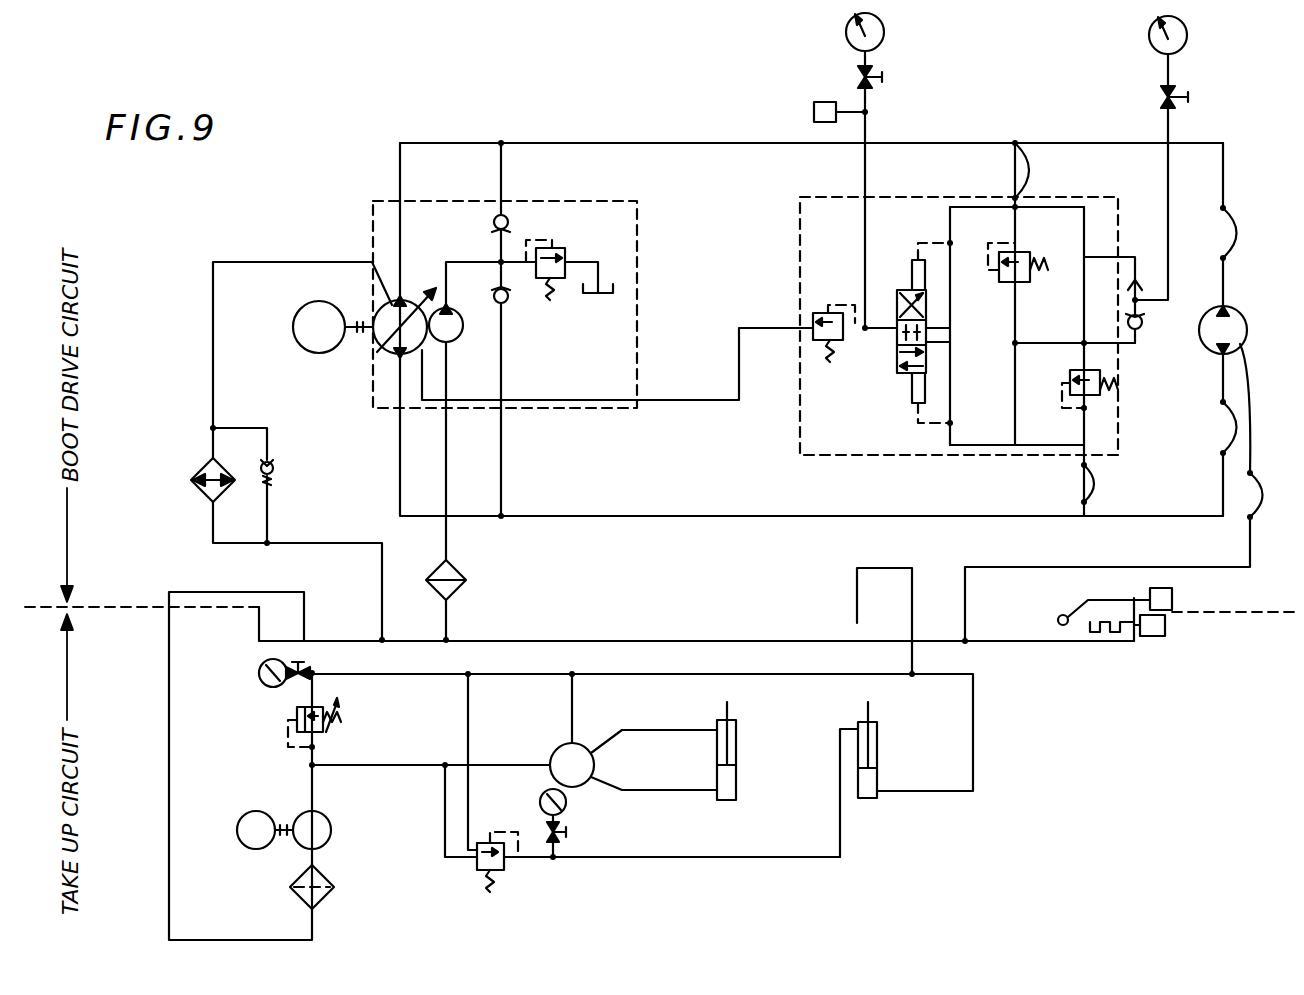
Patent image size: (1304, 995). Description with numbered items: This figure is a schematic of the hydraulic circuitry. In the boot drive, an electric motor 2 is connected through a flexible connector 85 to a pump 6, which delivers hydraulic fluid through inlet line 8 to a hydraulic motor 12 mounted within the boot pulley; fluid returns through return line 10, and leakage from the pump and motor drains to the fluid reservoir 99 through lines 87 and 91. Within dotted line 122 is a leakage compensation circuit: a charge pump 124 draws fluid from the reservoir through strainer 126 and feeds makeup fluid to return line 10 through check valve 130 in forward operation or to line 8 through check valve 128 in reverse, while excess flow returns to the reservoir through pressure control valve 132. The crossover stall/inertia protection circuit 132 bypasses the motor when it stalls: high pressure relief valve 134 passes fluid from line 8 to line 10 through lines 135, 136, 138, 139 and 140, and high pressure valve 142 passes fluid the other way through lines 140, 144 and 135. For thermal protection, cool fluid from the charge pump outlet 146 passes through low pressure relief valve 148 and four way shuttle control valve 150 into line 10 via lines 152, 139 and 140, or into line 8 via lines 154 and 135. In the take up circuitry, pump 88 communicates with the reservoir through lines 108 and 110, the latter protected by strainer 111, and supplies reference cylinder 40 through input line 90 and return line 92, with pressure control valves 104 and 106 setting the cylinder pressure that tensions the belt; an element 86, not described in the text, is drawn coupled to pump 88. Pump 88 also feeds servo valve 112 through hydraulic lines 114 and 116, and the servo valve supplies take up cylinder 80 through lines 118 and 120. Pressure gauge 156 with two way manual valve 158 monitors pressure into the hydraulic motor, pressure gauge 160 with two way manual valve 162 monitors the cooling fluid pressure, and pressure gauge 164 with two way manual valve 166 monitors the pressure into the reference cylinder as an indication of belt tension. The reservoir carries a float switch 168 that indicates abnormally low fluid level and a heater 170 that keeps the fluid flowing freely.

The electric motor 2 is at (328, 340).
The pump 6 is at (405, 300).
The inlet line 8 is at (660, 143).
The return line 10 is at (685, 517).
The hydraulic motor 12 is at (1243, 320).
The reference cylinder 40 is at (878, 762).
The take up cylinder 80 is at (740, 784).
The flexible connector 85 is at (363, 320).
The electric motor 86 is at (248, 812).
The line 87 is at (213, 378).
The pump 88 is at (333, 840).
The input line 90 is at (686, 674).
The line 91 is at (1252, 432).
The return line 92 is at (690, 858).
The fluid reservoir 99 is at (597, 295).
The pressure control valve 104 is at (297, 716).
The pressure control valve 106 is at (474, 868).
The line 108 is at (857, 588).
The line 110 is at (169, 752).
The strainer or screen 111 is at (333, 895).
The servo valve 112 is at (554, 748).
The hydraulic line 114 is at (400, 758).
The hydraulic line 116 is at (574, 700).
The line 118 is at (678, 730).
The line 120 is at (675, 793).
The dotted line 122 is at (637, 338).
The charge pump 124 is at (450, 345).
The strainer 126 is at (458, 588).
The check valve 128 is at (508, 218).
The check valve 130 is at (506, 302).
The pressure control valve / crossover stall/inertia protection circuit 132 is at (566, 250).
The high pressure relief valve 134 is at (1040, 280).
The line 135 is at (1028, 170).
The line 136 is at (1015, 222).
The line 138 is at (1015, 412).
The line 139 is at (1052, 456).
The line 140 is at (1093, 490).
The high pressure valve 142 is at (1100, 396).
The line 144 is at (1084, 331).
The outlet 146 is at (600, 400).
The low pressure relief valve 148 is at (846, 350).
The four way shuttle control valve 150 is at (897, 360).
The line 152 is at (952, 384).
The line 154 is at (950, 315).
The pressure gauge 156 is at (1184, 46).
The two way manual valve 158 is at (1175, 104).
The pressure gauge 160 is at (880, 44).
The two way manual valve 162 is at (868, 86).
The pressure gauge 164 is at (259, 673).
The two way manual valve 166 is at (305, 672).
The float switch 168 is at (1172, 602).
The heater 170 is at (1165, 630).